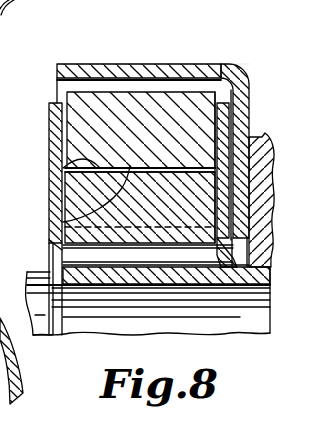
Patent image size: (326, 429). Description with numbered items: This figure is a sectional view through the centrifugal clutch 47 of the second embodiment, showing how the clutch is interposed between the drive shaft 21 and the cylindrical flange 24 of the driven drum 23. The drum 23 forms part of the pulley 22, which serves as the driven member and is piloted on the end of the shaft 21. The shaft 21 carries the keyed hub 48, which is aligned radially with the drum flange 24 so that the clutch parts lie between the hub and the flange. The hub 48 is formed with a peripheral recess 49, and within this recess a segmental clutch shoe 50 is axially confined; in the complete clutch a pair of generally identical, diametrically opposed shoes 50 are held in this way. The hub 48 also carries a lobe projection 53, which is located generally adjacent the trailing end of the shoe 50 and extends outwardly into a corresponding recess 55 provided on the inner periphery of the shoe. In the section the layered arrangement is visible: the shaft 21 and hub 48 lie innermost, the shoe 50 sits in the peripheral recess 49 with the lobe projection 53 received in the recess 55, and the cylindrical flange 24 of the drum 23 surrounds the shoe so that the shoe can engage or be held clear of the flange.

The shaft 21 is at (208, 327).
The pulley 22 is at (264, 138).
The drum 23 is at (250, 64).
The cylindrical flange 24 is at (178, 64).
The clutch 47 is at (137, 48).
The keyed hub 48 is at (78, 197).
The peripheral recess 49 is at (70, 134).
The segmental clutch shoe 50 is at (95, 103).
The lobe projection 53 is at (63, 169).
The recess 55 is at (63, 222).